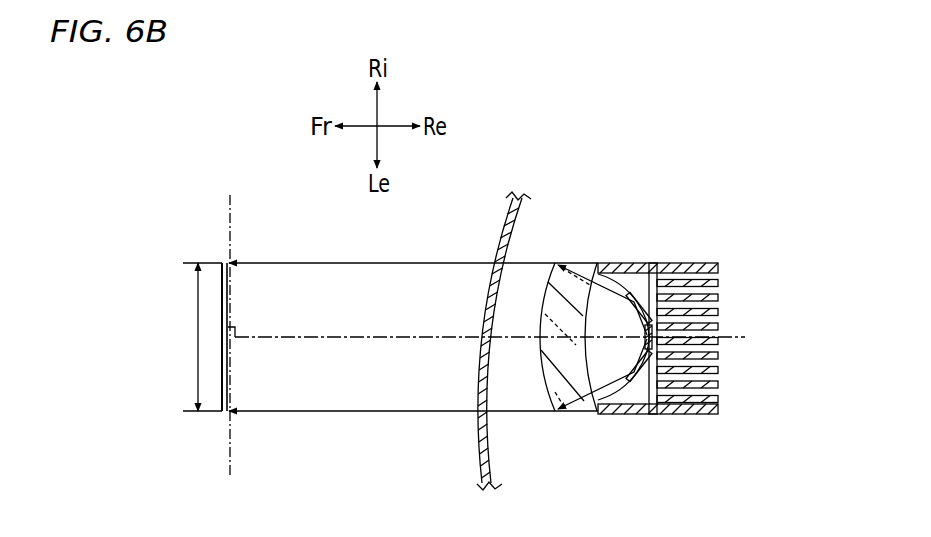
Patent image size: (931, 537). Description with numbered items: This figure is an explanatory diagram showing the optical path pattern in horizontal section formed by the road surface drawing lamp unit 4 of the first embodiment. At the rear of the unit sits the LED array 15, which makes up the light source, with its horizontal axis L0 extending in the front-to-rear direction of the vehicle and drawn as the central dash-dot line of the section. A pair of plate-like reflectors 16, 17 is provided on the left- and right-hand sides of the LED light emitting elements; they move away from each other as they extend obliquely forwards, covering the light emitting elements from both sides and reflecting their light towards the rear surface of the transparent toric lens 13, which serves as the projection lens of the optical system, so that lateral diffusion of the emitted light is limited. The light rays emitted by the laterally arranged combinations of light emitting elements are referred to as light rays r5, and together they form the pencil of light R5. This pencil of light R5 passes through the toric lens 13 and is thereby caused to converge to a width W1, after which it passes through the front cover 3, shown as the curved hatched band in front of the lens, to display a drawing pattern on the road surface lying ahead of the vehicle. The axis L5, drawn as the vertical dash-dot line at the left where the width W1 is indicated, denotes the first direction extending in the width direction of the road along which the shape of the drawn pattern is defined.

The front cover 3 is at (478, 454).
The road surface drawing lamp unit 4 is at (654, 261).
The toric lens 13 is at (537, 273).
The LED array 15 is at (655, 345).
The reflector 16 is at (634, 388).
The reflector 17 is at (637, 263).
The light rays r5 is at (301, 262).
The pencil of light R5 is at (351, 346).
The width W1 is at (197, 337).
The axis in the width direction of the road L5 is at (232, 207).
The horizontal axis L0 is at (722, 337).